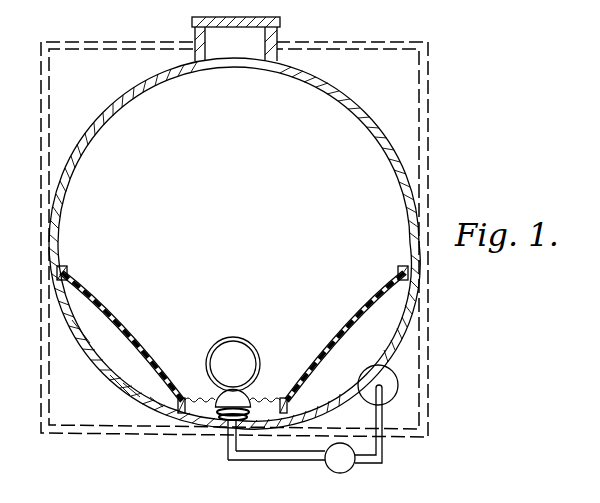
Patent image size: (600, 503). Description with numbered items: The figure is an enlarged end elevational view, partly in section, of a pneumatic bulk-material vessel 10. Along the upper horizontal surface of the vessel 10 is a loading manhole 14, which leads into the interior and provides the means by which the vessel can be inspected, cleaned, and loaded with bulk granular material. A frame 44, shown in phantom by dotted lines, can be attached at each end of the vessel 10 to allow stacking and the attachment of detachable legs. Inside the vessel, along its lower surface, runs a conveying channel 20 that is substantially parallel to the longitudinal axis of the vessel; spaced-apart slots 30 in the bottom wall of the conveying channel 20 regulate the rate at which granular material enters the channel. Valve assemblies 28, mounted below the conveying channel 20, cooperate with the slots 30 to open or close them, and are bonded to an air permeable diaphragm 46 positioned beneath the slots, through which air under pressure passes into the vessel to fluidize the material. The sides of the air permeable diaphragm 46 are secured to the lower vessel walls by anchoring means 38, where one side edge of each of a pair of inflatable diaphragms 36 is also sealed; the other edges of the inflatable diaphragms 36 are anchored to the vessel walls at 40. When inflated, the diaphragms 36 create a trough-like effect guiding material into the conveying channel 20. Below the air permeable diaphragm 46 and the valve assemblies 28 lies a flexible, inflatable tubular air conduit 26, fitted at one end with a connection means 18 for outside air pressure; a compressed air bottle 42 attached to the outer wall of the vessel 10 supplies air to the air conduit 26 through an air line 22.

The vessel 10 is at (72, 155).
The loading manhole 14 is at (258, 38).
The connection means 18 is at (228, 443).
The conveying channel 20 is at (237, 338).
The air line 22 is at (283, 457).
The tubular air conduit 26 is at (215, 415).
The valve assembly 28 is at (215, 397).
The slots 30 is at (227, 388).
The inflatable diaphragms 36 is at (125, 325).
The anchoring means 38 is at (300, 392).
The anchoring location 40 is at (60, 272).
The compressed air bottle 42 is at (397, 387).
The frame 44 is at (428, 115).
The air permeable diaphragm 46 is at (262, 397).